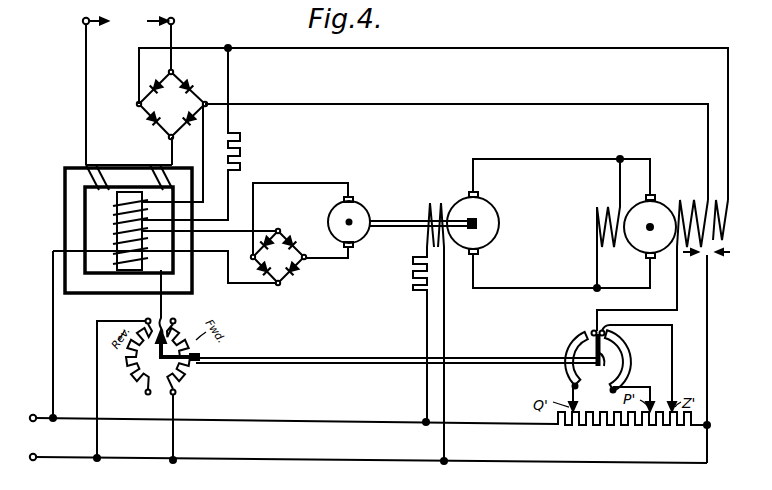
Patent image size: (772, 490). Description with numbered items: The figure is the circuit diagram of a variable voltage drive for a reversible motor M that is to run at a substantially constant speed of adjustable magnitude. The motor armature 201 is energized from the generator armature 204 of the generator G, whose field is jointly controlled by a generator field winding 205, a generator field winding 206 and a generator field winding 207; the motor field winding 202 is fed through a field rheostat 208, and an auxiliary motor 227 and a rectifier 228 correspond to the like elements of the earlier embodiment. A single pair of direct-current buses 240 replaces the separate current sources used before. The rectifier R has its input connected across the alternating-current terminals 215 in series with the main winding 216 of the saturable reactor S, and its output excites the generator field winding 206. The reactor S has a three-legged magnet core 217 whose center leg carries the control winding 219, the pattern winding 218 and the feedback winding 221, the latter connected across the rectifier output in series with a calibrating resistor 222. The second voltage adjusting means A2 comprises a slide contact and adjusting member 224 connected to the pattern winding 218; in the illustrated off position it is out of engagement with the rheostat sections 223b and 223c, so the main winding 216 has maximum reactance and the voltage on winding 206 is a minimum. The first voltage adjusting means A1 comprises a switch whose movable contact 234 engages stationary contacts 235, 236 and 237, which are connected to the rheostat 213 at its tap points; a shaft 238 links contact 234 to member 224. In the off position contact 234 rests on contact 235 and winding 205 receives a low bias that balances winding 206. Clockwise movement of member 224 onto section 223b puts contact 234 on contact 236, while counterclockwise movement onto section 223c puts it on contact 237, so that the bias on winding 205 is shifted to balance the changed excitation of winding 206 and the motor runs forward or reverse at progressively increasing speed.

The alternating-current terminals 215 is at (83, 20).
The rectifier R is at (184, 106).
The calibrating resistor 222 is at (242, 158).
The three-legged magnet core 217 is at (65, 220).
The saturable reactor S is at (211, 276).
The main winding 216 is at (97, 170).
The control winding 219 is at (119, 232).
The feedback winding 221 is at (146, 156).
The pattern winding 218 is at (131, 270).
The slide contact and adjusting member 224 is at (173, 355).
The rheostat section (forward) 223b is at (196, 372).
The rheostat section (reverse) 223c is at (138, 378).
The second voltage adjusting means A2 is at (167, 410).
The direct-current buses 240 is at (283, 423).
The shaft 238 is at (342, 364).
The auxiliary motor 227 is at (336, 214).
The rectifier 228 is at (331, 296).
The motor field winding 202 is at (429, 213).
The field rheostat 208 is at (412, 278).
The motor armature 201 is at (494, 215).
The motor M is at (466, 209).
The generator field winding 207 is at (594, 213).
The generator armature 204 is at (660, 196).
The generator G is at (640, 204).
The generator field winding 205 is at (692, 207).
The generator field winding 206 is at (724, 238).
The stationary contact 235 is at (594, 330).
The stationary contact 237 is at (566, 349).
The stationary contact 236 is at (630, 367).
The movable contact 234 is at (595, 359).
The first voltage adjusting means A1 is at (553, 387).
The rheostat 213 is at (626, 428).